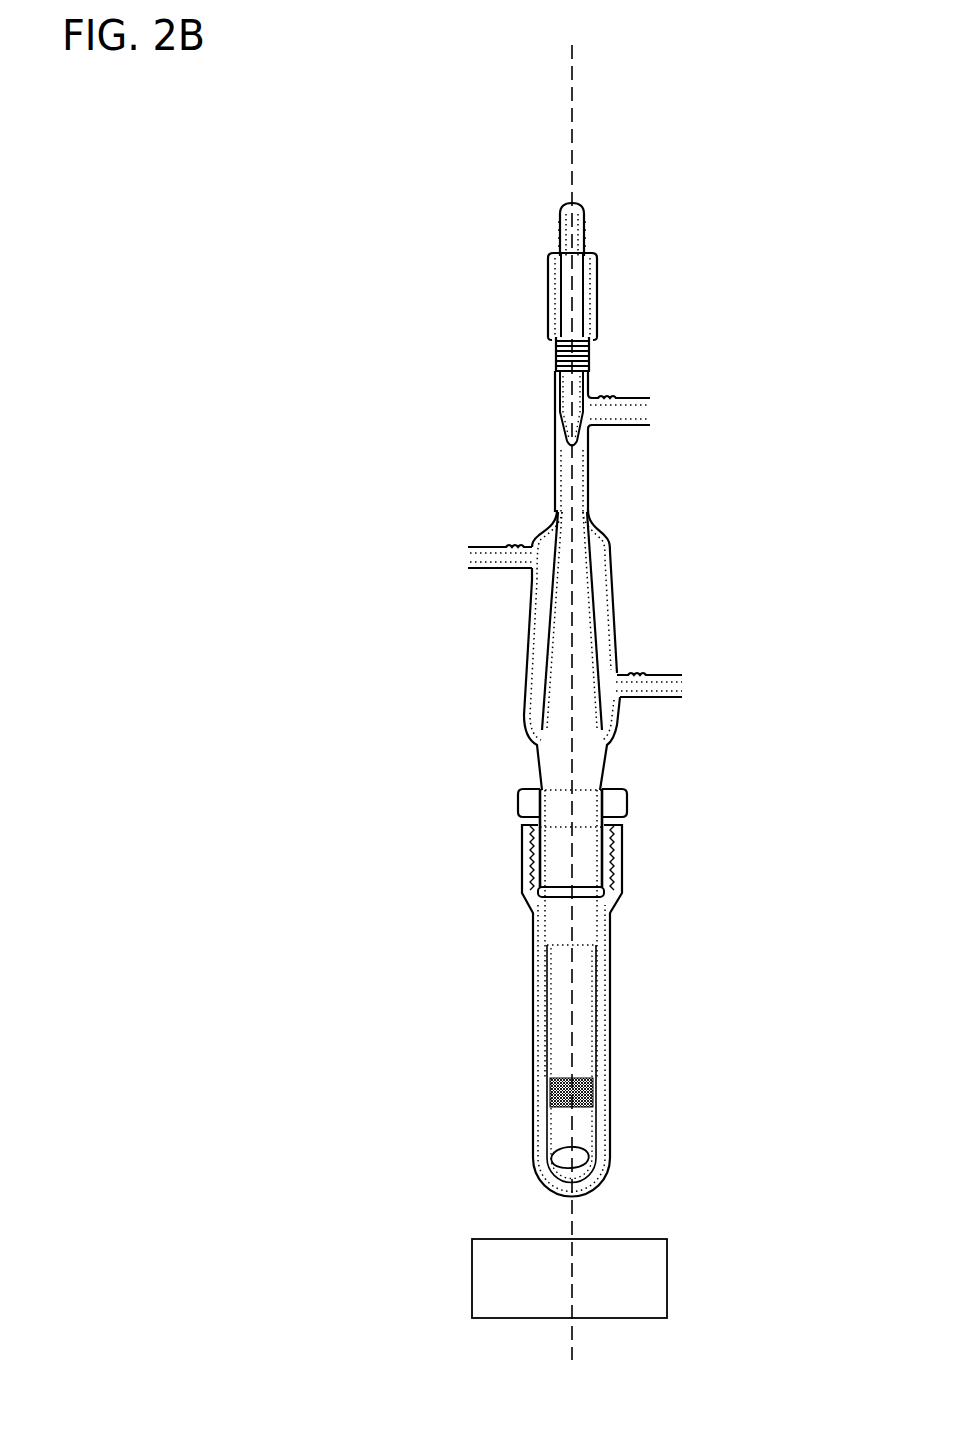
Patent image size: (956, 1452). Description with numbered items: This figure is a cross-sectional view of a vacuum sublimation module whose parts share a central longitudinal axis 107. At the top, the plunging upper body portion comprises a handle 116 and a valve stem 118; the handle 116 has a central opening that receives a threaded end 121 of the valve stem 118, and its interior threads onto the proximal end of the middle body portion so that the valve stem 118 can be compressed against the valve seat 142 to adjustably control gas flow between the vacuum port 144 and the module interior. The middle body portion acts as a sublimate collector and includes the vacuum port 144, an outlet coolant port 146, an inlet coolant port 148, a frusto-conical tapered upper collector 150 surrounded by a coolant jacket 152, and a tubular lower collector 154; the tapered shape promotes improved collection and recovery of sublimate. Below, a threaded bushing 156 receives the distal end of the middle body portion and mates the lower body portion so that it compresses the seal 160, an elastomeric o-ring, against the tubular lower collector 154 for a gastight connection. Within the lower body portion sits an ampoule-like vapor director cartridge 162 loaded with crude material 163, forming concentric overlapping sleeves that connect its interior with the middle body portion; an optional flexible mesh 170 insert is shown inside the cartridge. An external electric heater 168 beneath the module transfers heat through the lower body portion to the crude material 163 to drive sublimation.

The central longitudinal axis 107 is at (572, 145).
The threaded end 121 is at (560, 218).
The handle 116 is at (548, 258).
The valve stem 118 is at (557, 388).
The valve seat 142 is at (568, 448).
The vacuum port 144 is at (620, 423).
The outlet coolant port 146 is at (505, 568).
The inlet coolant port 148 is at (640, 698).
The tapered upper collector 150 is at (546, 652).
The coolant jacket 152 is at (613, 598).
The tubular lower collector 154 is at (598, 813).
The bushing 156 is at (518, 800).
The seal 160 is at (533, 890).
The vapor director cartridge 162 is at (595, 1007).
The crude material 163 is at (573, 1148).
The electric heater 168 is at (651, 1238).
The mesh 170 is at (593, 1080).